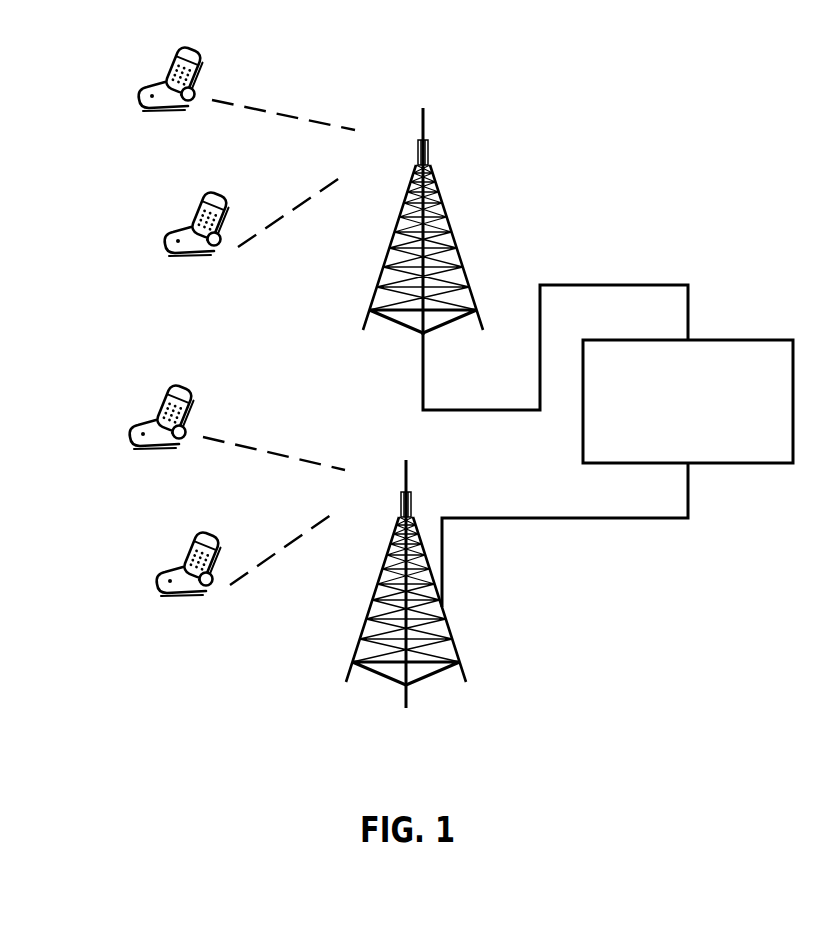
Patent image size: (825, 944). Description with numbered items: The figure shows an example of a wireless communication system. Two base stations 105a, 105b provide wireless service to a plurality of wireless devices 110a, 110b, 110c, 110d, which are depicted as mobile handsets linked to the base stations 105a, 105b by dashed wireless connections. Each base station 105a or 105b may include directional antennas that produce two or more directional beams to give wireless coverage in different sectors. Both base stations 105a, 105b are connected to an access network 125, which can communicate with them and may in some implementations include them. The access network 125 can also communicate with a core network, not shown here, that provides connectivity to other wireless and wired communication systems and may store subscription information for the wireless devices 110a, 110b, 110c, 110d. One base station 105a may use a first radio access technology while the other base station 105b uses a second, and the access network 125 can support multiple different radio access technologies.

The wireless device 110a is at (152, 49).
The wireless device 110b is at (180, 196).
The wireless device 110c is at (144, 331).
The wireless device 110d is at (172, 536).
The base station 105a is at (437, 190).
The base station 105b is at (413, 500).
The access network 125 is at (597, 340).